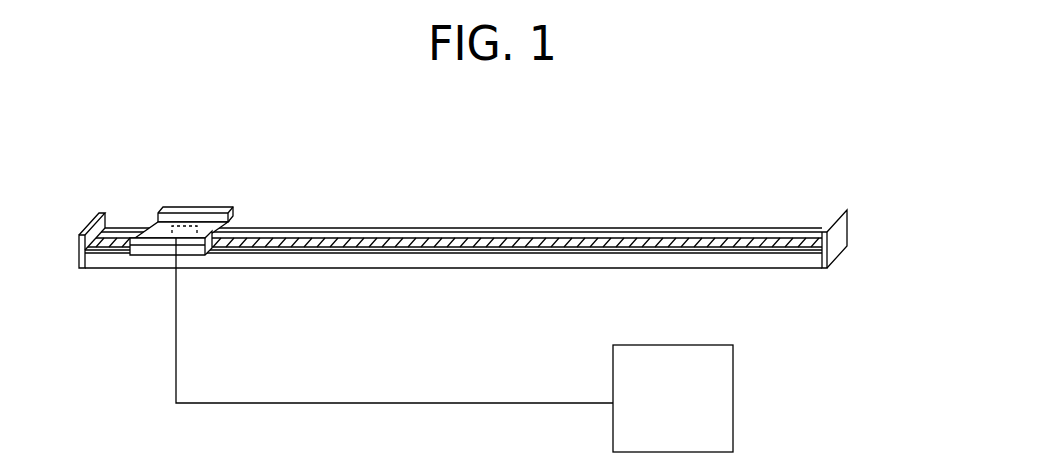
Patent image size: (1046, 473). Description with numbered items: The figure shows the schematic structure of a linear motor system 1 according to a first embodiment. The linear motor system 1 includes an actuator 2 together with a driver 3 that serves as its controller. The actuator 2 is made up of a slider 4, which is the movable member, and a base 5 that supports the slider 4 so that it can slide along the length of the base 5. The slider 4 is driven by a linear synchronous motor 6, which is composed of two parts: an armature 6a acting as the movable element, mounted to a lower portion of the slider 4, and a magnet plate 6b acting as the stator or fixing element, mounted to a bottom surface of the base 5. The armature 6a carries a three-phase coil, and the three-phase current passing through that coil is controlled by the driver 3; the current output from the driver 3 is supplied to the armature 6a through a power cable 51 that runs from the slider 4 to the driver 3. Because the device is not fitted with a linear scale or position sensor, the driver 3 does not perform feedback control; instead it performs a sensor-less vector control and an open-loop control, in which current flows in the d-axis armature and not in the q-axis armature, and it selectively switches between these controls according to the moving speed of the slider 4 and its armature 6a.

The linear motor system 1 is at (223, 463).
The actuator 2 is at (417, 217).
The driver 3 is at (692, 345).
The slider 4 is at (167, 207).
The base 5 is at (266, 262).
The linear synchronous motor 6 is at (273, 168).
The armature 6a is at (177, 238).
The magnet plate 6b is at (260, 238).
The power cable 51 is at (398, 402).